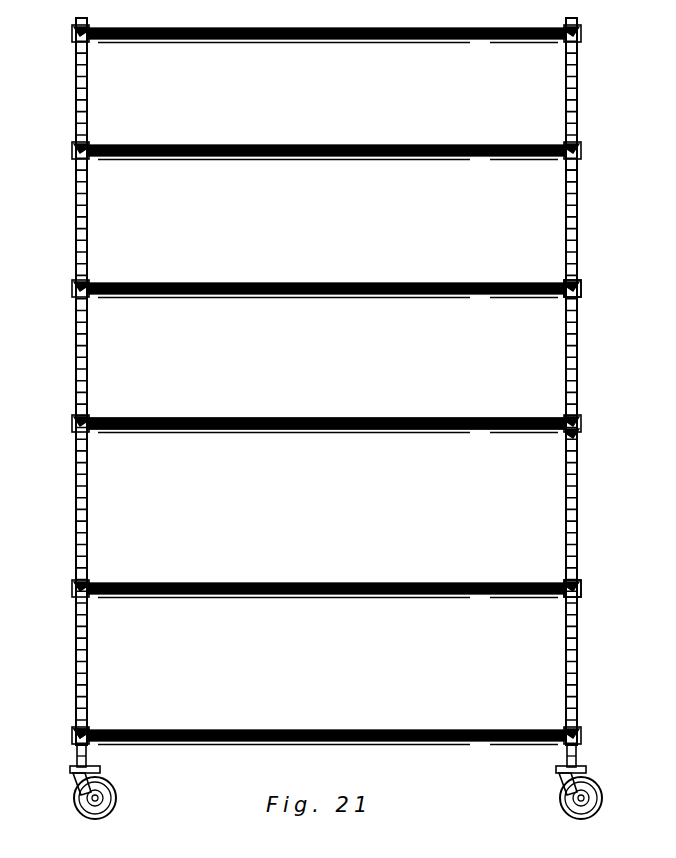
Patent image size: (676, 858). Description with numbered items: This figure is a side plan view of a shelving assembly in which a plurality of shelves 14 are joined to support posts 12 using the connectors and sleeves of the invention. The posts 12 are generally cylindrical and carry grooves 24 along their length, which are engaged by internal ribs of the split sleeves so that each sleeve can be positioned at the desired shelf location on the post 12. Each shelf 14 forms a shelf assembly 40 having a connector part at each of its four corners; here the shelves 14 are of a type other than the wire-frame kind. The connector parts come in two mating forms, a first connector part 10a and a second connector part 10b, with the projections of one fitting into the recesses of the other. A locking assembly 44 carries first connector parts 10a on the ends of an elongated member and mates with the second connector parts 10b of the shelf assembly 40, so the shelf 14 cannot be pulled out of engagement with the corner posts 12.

The first connector part 10a is at (579, 153).
The second connector part 10b is at (566, 60).
The support post 12 is at (577, 203).
The shelf 14 is at (507, 417).
The groove 24 is at (577, 183).
The shelf assembly 40 is at (543, 435).
The locking assembly 44 is at (580, 281).